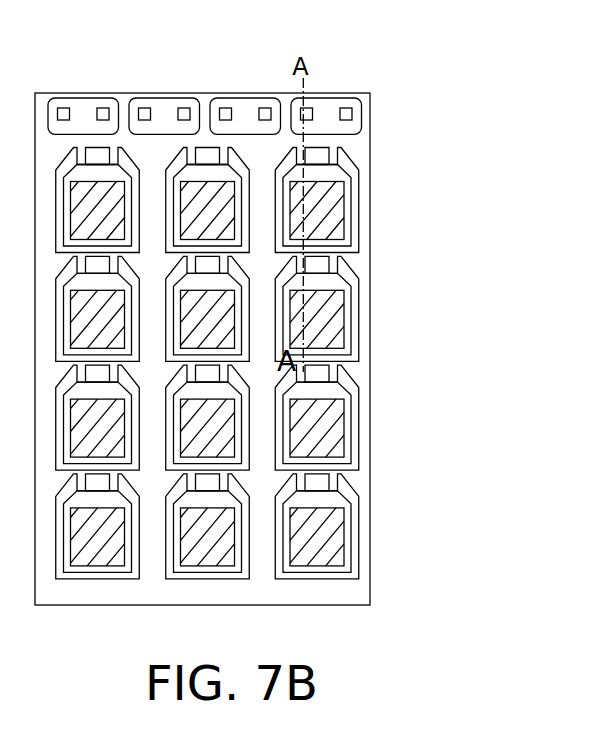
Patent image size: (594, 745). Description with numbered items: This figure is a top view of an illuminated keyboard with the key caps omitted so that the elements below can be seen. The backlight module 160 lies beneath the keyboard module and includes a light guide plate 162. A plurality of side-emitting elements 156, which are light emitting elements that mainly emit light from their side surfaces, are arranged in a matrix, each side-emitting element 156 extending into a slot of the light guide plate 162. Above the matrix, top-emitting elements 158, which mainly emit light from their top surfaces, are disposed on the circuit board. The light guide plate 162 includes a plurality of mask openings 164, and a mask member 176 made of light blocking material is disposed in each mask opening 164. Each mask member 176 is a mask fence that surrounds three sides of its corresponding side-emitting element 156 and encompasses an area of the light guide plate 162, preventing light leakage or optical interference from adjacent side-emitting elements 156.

The side-emitting element 156 is at (318, 153).
The top-emitting element 158 is at (306, 108).
The backlight module 160 is at (320, 335).
The light guide plate 162 is at (296, 216).
The mask opening 164 is at (359, 192).
The mask member 176 is at (352, 301).